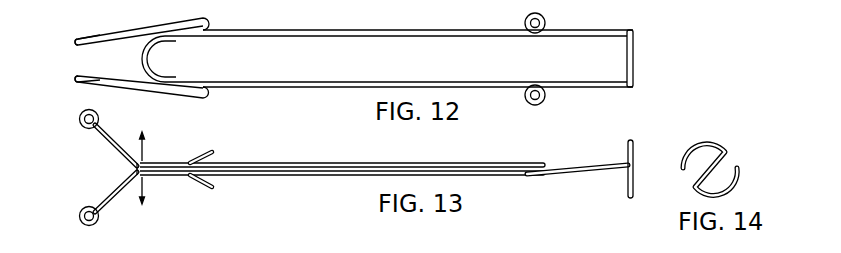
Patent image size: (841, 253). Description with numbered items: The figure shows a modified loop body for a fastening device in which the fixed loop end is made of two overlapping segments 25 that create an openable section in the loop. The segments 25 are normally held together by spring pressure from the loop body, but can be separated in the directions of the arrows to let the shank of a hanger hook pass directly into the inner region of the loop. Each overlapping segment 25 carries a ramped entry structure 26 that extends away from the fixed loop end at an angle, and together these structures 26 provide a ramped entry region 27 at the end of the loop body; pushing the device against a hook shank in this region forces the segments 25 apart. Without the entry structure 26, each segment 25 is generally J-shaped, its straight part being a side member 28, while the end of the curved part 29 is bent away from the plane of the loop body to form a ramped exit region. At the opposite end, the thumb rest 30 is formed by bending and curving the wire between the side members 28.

In FIG. 12, the overlapping segments 25 is at (148, 63).
In FIG. 13, the overlapping segments 25 is at (170, 166).
In FIG. 12, the ramped entry structure 26 is at (112, 76).
In FIG. 13, the ramped entry structure 26 is at (83, 129).
In FIG. 13, the ramped entry region 27 is at (102, 165).
In FIG. 12, the side members 28 is at (345, 38).
In FIG. 13, the side members 28 is at (309, 162).
In FIG. 12, the end of the curved part of the J 29 is at (210, 23).
In FIG. 13, the end of the curved part of the J 29 is at (213, 151).
In FIG. 12, the thumb rest 30 is at (634, 58).
In FIG. 13, the thumb rest 30 is at (627, 190).
In FIG. 14, the thumb rest 30 is at (712, 138).